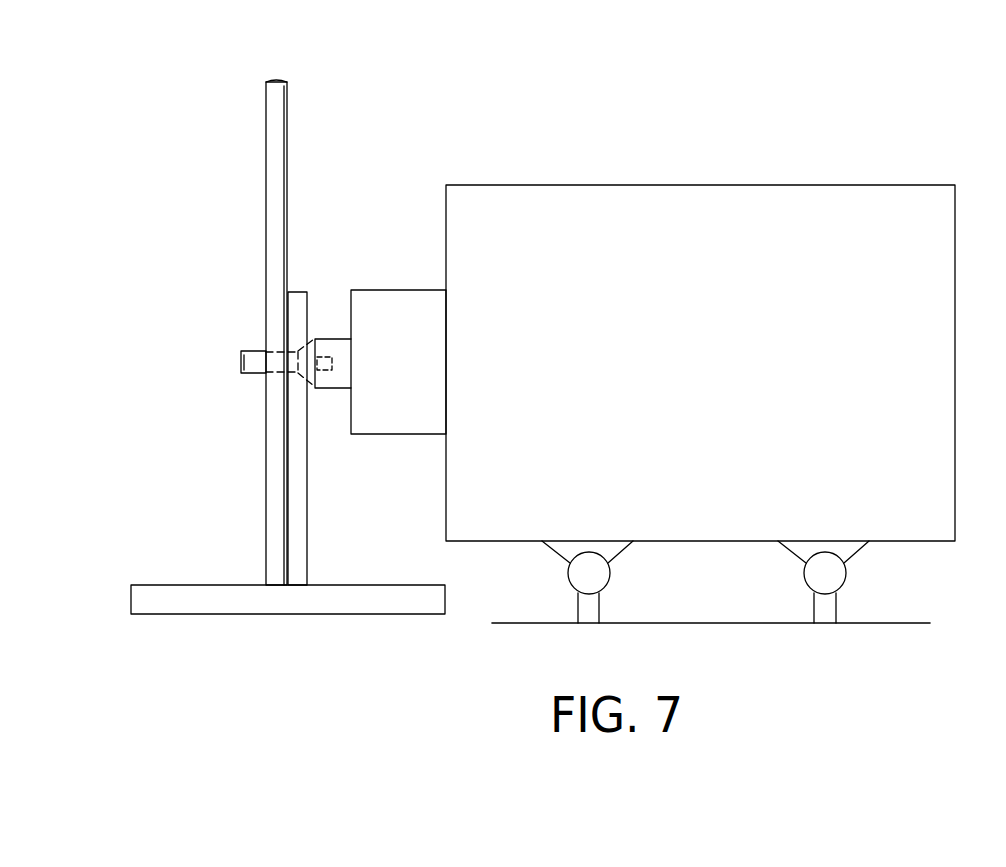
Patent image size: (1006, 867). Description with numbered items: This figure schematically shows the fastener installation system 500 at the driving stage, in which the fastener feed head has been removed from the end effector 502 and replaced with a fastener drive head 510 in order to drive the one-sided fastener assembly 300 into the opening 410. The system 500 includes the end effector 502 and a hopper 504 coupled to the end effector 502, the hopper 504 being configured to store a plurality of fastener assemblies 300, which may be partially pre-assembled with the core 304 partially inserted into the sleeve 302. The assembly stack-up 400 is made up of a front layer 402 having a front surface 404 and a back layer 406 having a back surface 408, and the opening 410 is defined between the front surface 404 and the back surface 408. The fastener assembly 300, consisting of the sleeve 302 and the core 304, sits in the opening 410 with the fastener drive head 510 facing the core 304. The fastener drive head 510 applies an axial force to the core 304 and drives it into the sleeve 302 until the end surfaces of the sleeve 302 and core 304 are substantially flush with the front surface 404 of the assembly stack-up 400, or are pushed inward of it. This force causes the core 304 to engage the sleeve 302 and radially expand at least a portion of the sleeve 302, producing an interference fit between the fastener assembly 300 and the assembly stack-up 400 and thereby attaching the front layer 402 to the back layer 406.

The one-sided fastener assembly 300 is at (251, 374).
The sleeve 302 is at (243, 352).
The core 304 is at (307, 375).
The assembly stack-up 400 is at (342, 180).
The front layer 402 is at (293, 563).
The front surface 404 is at (307, 496).
The back layer 406 is at (288, 100).
The back surface 408 is at (266, 100).
The opening 410 is at (281, 374).
The fastener installation system 500 is at (826, 95).
The end effector 502 is at (432, 380).
The hopper 504 is at (713, 358).
The fastener drive head 510 is at (327, 347).